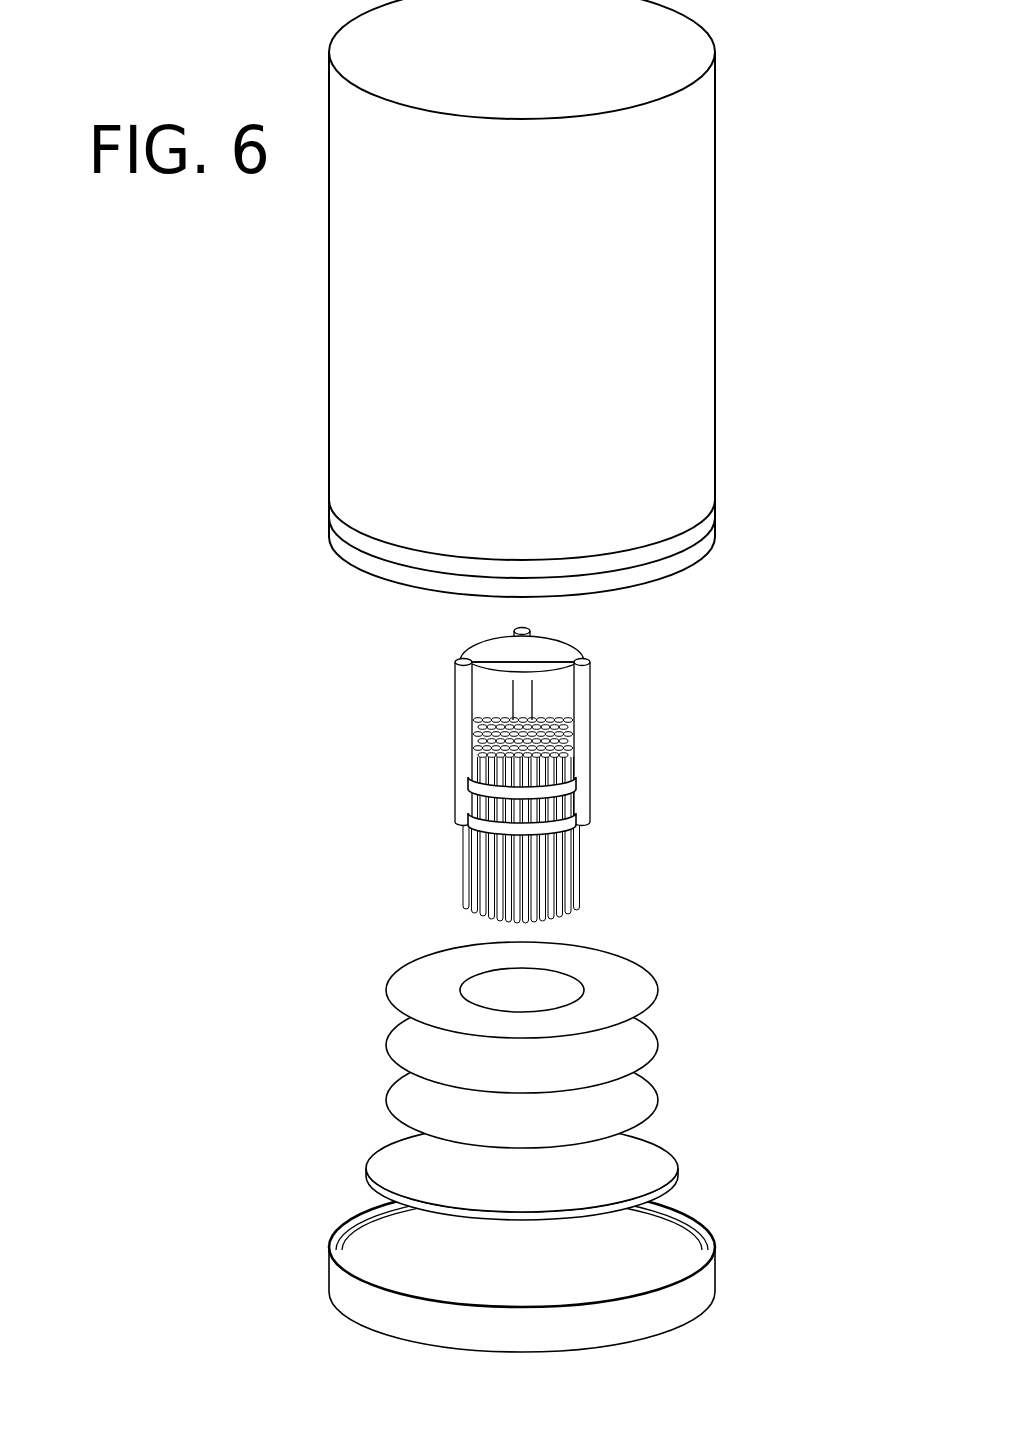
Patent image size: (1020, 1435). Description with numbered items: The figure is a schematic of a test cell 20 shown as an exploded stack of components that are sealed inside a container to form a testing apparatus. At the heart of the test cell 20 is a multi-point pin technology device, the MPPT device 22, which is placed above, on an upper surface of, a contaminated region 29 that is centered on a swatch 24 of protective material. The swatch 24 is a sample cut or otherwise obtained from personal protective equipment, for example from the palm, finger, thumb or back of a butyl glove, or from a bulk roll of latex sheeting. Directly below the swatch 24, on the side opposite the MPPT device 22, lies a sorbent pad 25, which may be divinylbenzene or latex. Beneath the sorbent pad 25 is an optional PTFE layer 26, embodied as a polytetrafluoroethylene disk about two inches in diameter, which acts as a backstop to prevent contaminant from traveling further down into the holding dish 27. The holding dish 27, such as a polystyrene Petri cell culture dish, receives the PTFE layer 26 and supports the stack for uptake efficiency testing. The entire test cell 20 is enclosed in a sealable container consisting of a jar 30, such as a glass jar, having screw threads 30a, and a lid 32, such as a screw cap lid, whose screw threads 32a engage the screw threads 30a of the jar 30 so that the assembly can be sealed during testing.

The test cell 20 is at (262, 782).
The multi-point pin technology (MPPT) device 22 is at (632, 758).
The swatch 24 is at (653, 983).
The sorbent pad 25 is at (652, 1036).
The PTFE layer 26 is at (652, 1093).
The holding dish 27 is at (672, 1153).
The contaminated region 29 is at (573, 975).
The jar 30 is at (703, 303).
The screw threads 30a is at (477, 560).
The lid 32 is at (708, 1278).
The screw threads 32a is at (678, 1230).